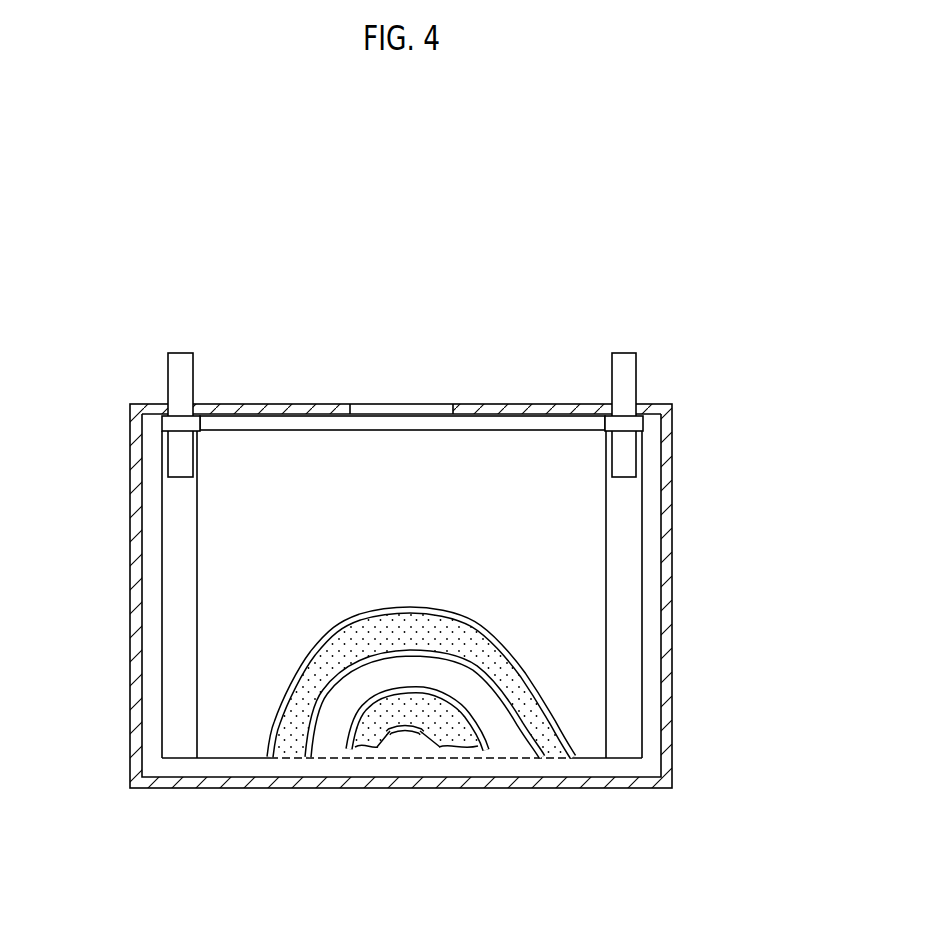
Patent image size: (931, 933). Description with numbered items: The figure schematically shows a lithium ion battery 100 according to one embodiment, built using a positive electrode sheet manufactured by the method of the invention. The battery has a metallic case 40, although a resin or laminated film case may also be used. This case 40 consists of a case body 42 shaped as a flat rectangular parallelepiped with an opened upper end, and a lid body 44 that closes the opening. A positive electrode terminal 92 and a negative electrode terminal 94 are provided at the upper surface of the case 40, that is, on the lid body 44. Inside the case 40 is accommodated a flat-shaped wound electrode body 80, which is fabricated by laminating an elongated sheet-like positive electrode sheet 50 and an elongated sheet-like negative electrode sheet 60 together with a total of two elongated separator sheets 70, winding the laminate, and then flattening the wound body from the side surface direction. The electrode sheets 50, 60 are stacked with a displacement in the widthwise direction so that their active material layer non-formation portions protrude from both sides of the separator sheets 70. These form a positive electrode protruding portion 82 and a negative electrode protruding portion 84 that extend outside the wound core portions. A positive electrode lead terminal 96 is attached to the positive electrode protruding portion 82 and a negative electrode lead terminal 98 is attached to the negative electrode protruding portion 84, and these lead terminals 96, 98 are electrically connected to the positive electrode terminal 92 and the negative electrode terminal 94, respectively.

The lithium ion battery 100 is at (686, 310).
The case 40 is at (674, 690).
The case body 42 is at (665, 553).
The lid body 44 is at (266, 411).
The positive electrode sheet 50 is at (242, 740).
The negative electrode sheet 60 is at (333, 745).
The separator sheet 70 is at (292, 742).
The wound electrode body 80 is at (523, 420).
The positive electrode protruding portion 82 is at (177, 627).
The negative electrode protruding portion 84 is at (625, 640).
The positive electrode terminal 92 is at (185, 367).
The negative electrode terminal 94 is at (625, 367).
The positive electrode lead terminal 96 is at (187, 462).
The negative electrode lead terminal 98 is at (622, 462).